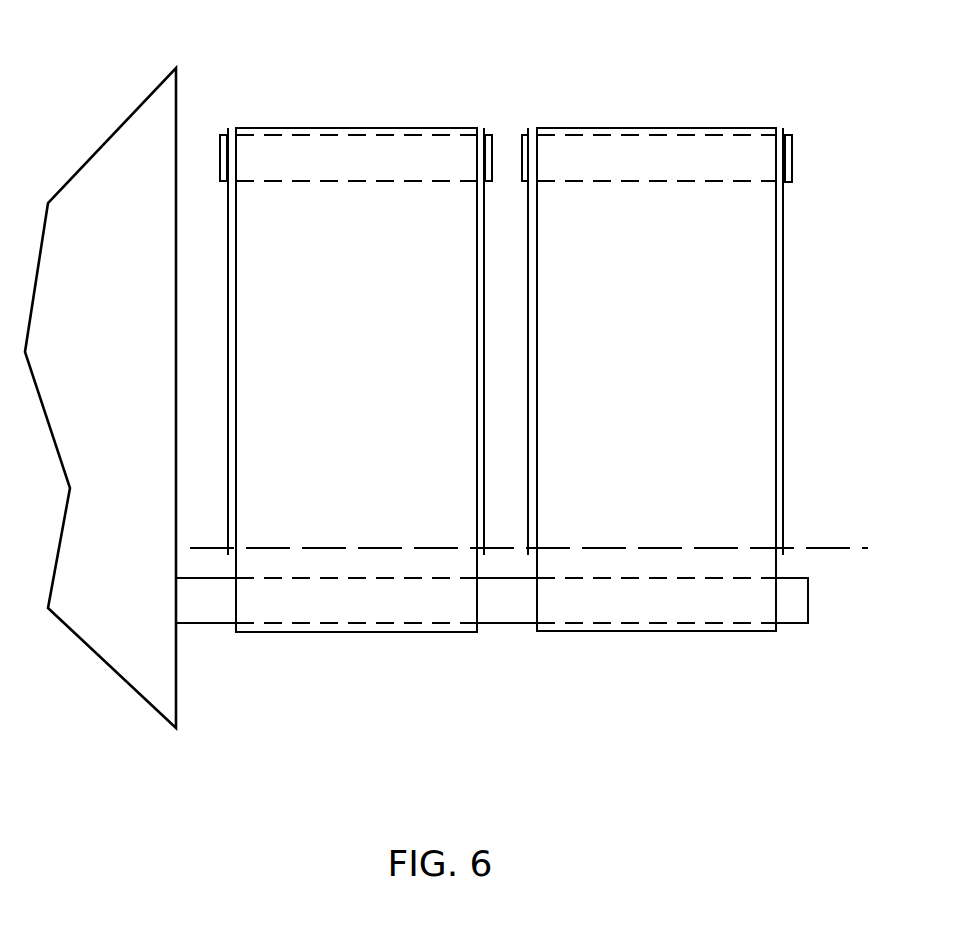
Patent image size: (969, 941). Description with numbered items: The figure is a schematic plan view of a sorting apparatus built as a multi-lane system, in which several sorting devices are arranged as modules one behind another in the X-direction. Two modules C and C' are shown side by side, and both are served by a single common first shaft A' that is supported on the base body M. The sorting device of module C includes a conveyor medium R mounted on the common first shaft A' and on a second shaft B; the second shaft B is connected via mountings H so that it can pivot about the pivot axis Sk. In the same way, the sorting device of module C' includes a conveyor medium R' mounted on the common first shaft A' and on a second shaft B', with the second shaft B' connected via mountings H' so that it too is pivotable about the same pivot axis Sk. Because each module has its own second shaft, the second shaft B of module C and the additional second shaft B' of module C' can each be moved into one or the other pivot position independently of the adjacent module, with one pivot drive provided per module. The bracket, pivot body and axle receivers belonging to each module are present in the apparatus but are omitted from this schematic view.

The base body M is at (100, 398).
The conveyor medium R is at (356, 380).
The conveyor medium R' is at (656, 379).
The mountings H is at (355, 341).
The mountings H' is at (665, 341).
The second shaft B is at (364, 126).
The second shaft B' is at (670, 125).
The module C is at (371, 68).
The module C' is at (674, 77).
The common first shaft A' is at (508, 642).
The pivot axis Sk is at (856, 548).